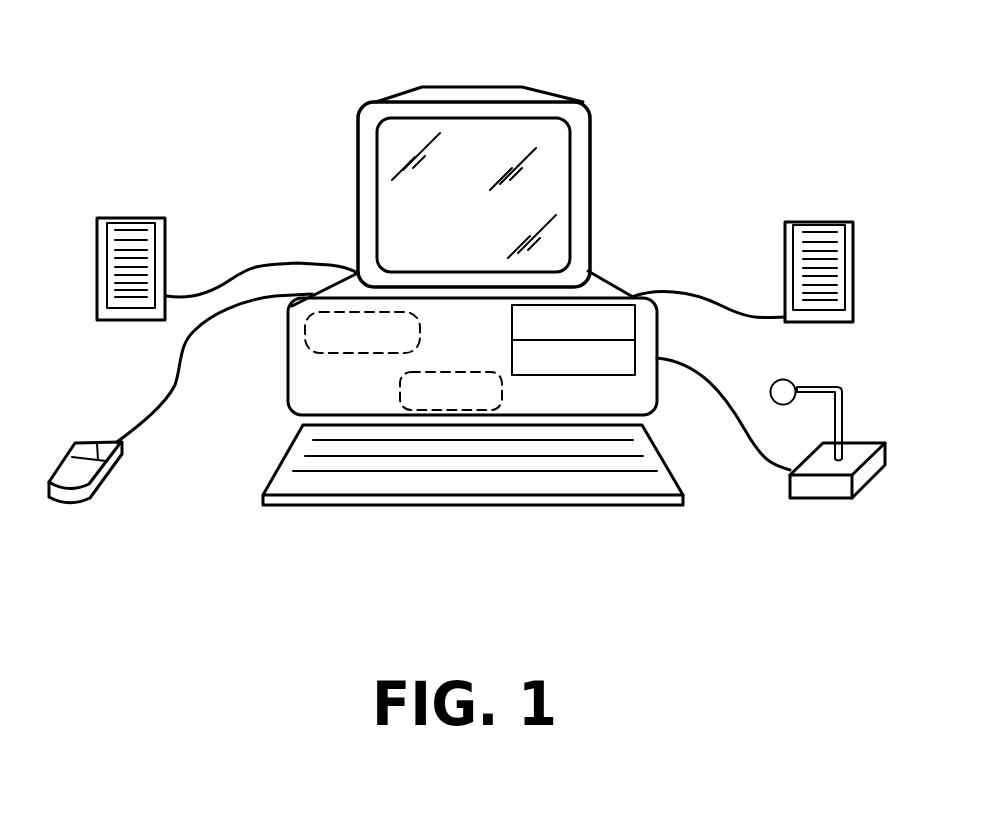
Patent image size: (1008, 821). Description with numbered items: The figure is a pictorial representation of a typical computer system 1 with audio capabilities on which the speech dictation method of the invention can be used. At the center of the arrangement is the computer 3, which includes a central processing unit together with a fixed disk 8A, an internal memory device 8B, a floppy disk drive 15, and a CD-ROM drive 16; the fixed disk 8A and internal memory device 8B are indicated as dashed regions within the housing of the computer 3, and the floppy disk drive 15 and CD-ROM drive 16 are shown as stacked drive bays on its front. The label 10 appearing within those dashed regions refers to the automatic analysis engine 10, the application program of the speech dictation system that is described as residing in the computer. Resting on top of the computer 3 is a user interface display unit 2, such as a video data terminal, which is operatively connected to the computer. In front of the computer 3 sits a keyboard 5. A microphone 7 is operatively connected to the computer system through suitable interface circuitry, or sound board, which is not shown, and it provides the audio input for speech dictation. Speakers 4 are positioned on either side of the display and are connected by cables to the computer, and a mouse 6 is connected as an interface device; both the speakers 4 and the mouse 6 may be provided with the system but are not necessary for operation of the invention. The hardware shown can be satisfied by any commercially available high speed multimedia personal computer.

The computer system 1 is at (306, 111).
The user interface display unit 2 is at (590, 185).
The computer 3 is at (431, 316).
The speakers 4 is at (97, 250).
The keyboard 5 is at (487, 506).
The mouse 6 is at (108, 465).
The microphone 7 is at (827, 487).
The fixed disk 8A is at (305, 342).
The internal memory device 8B is at (400, 396).
The automatic analysis engine 10 is at (353, 358).
The floppy disk drive 15 is at (528, 339).
The CD-ROM drive 16 is at (586, 374).